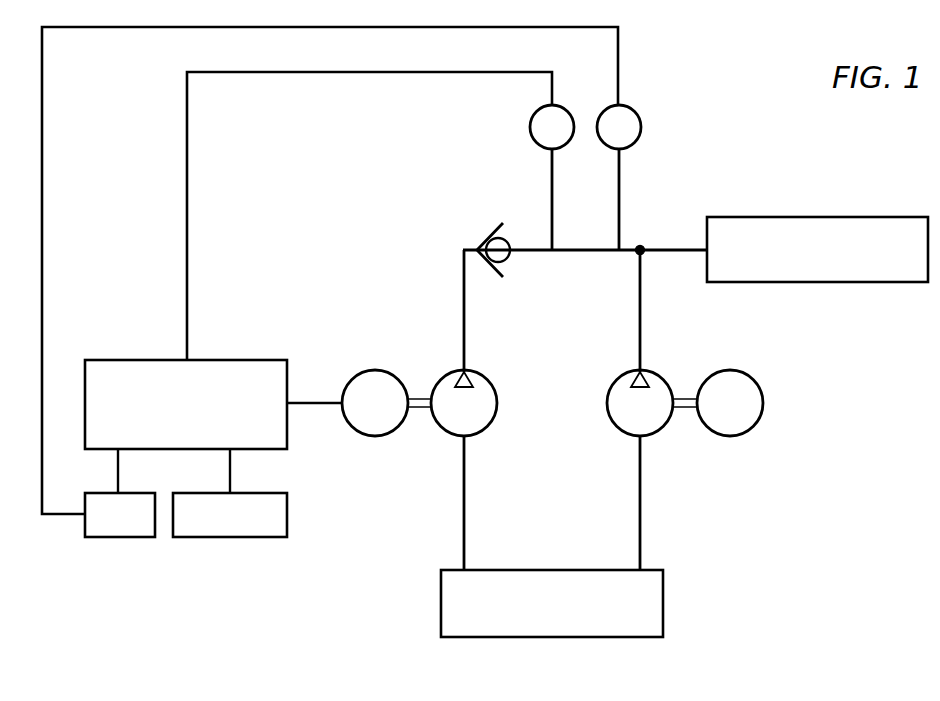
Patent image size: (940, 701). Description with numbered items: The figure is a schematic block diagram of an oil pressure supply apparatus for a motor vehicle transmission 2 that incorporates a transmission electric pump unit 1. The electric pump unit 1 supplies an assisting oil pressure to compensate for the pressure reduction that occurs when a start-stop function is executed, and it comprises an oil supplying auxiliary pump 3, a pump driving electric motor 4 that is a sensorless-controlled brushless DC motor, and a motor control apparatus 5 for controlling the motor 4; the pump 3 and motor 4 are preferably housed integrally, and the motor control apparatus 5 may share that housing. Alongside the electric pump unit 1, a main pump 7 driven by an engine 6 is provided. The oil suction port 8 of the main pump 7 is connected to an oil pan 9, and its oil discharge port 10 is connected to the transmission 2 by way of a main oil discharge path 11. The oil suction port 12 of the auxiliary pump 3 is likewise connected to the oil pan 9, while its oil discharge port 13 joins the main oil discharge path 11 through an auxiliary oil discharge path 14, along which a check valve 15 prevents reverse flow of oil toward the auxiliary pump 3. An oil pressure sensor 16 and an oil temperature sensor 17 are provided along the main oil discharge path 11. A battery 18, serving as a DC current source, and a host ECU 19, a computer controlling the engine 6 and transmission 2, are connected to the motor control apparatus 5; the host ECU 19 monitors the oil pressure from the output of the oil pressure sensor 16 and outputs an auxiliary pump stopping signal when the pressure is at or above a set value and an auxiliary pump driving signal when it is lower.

The transmission electric pump unit 1 is at (507, 402).
The transmission 2 is at (816, 283).
The pump 3 is at (445, 433).
The pump driving electric motor 4 is at (375, 437).
The motor control apparatus 5 is at (131, 358).
The engine 6 is at (730, 437).
The main pump 7 is at (660, 437).
The oil suction port 8 is at (610, 436).
The oil pan 9 is at (664, 603).
The oil discharge port 10 is at (640, 372).
The main oil discharge path 11 is at (677, 246).
The oil suction port 12 is at (470, 437).
The oil discharge port 13 is at (464, 372).
The auxiliary oil discharge path 14 is at (580, 253).
The check valve 15 is at (483, 236).
The oil pressure sensor 16 is at (641, 127).
The oil temperature sensor 17 is at (530, 127).
The battery 18 is at (230, 538).
The host ECU 19 is at (118, 538).